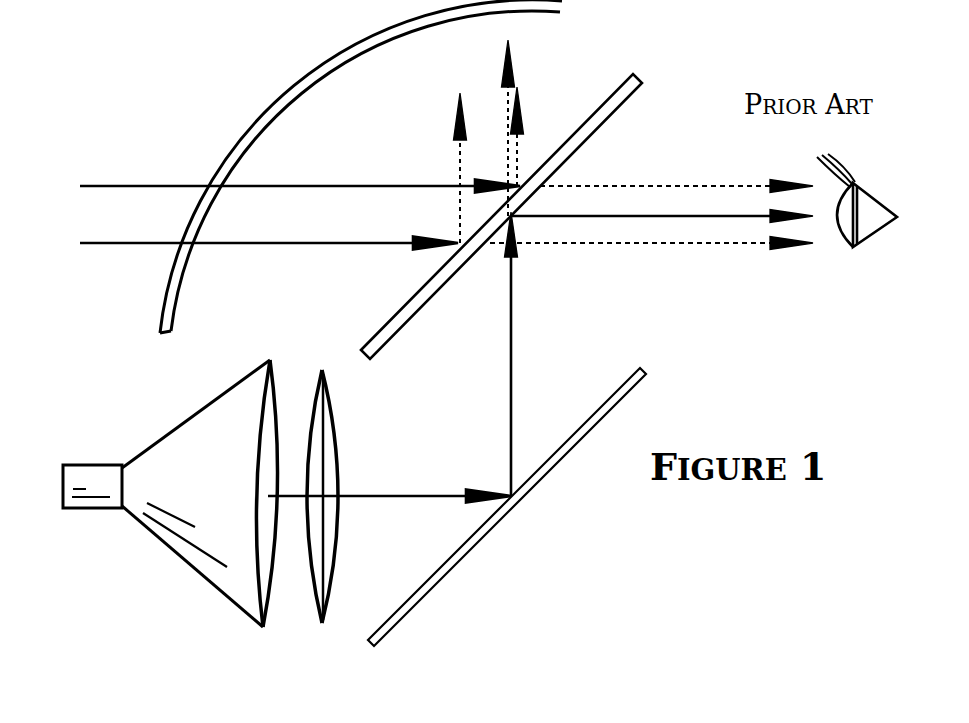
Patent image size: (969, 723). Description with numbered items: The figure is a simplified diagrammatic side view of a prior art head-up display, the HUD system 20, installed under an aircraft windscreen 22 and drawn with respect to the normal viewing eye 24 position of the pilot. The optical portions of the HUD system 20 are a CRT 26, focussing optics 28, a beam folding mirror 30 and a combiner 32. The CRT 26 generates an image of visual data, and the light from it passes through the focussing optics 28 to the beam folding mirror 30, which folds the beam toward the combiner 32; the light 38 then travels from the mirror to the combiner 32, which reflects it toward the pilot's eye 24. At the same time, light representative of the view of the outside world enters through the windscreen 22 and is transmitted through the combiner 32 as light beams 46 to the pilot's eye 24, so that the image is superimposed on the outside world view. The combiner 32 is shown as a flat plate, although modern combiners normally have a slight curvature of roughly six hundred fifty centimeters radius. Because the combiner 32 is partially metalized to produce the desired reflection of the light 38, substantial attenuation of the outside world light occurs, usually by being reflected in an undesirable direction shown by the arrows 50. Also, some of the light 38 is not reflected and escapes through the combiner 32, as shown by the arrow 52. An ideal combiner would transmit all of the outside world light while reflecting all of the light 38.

The HUD system 20 is at (355, 312).
The aircraft windscreen 22 is at (360, 43).
The eye 24 is at (875, 235).
The CRT 26 is at (152, 540).
The focussing optics 28 is at (337, 575).
The beam folding mirror 30 is at (468, 550).
The combiner 32 is at (412, 312).
The light 38 is at (512, 302).
The light beams 46 is at (673, 187).
The arrows 50 is at (515, 140).
The arrow 52 is at (515, 78).